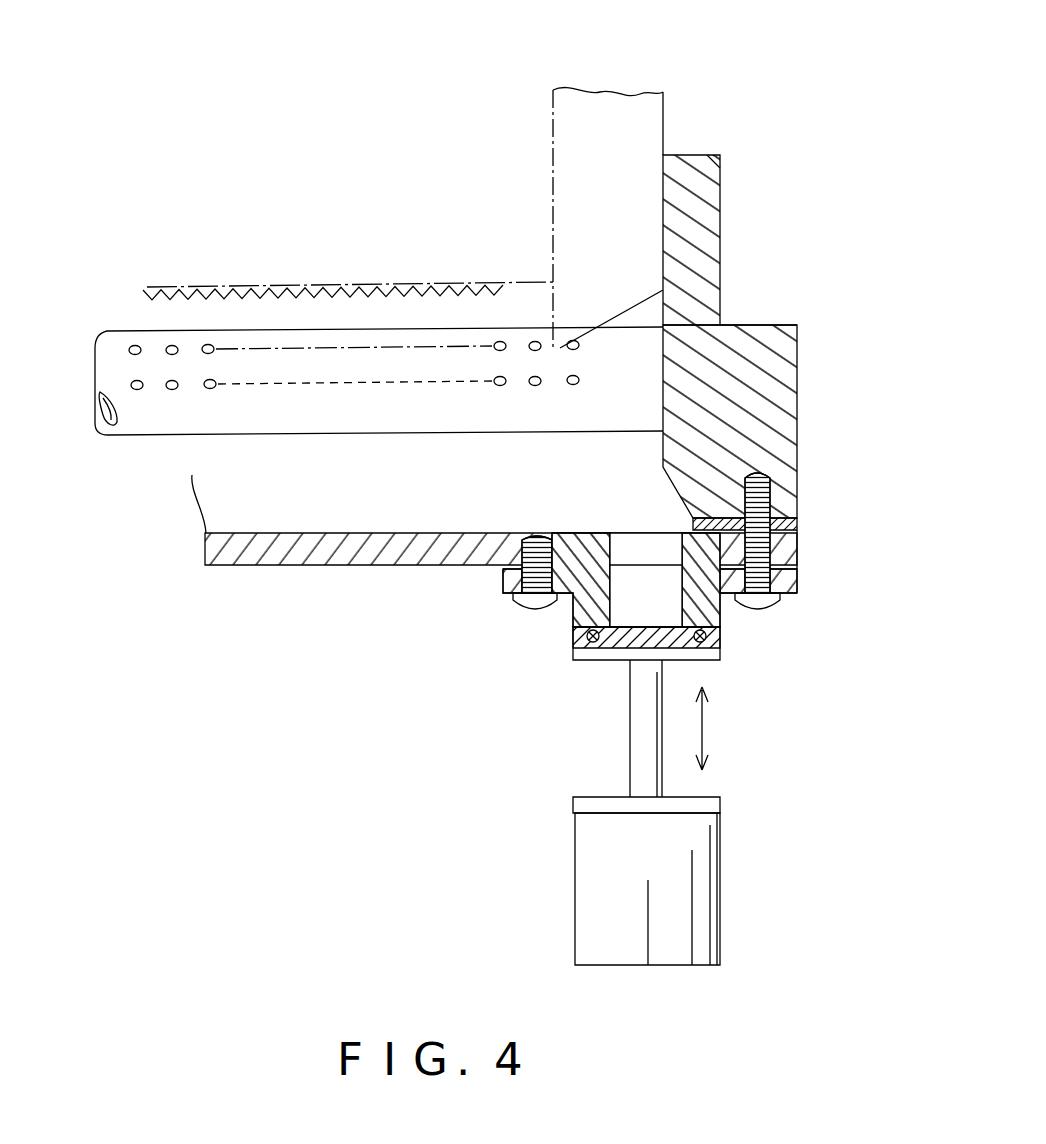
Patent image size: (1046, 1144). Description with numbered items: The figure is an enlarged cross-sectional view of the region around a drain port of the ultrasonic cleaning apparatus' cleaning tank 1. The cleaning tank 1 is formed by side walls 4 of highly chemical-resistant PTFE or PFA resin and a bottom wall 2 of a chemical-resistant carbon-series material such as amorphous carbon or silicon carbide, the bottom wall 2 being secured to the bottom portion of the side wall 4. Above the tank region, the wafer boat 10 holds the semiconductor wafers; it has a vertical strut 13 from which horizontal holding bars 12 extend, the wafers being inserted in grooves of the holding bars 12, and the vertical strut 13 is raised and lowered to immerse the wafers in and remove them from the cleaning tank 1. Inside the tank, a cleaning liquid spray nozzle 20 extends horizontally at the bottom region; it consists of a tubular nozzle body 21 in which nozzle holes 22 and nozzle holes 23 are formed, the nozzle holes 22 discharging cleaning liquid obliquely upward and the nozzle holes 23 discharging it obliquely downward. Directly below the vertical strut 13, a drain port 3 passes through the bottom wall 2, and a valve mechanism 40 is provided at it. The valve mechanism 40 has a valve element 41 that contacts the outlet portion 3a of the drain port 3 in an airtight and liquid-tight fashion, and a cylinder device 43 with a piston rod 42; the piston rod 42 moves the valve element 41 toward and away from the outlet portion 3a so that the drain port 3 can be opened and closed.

The cleaning tank 1 is at (720, 290).
The bottom wall 2 is at (255, 565).
The drain port 3 is at (648, 535).
The outlet portion 3a is at (612, 645).
The side wall 4 is at (720, 212).
The wafer boat 10 is at (668, 117).
The holding bar 12 is at (228, 313).
The vertical strut 13 is at (572, 140).
The cleaning liquid spray nozzle 20 is at (133, 437).
The tubular nozzle body 21 is at (192, 422).
The nozzle hole 22 is at (173, 347).
The nozzle hole 23 is at (172, 385).
The valve mechanism 40 is at (695, 827).
The valve element 41 is at (713, 647).
The piston rod 42 is at (642, 717).
The cylinder device 43 is at (592, 873).